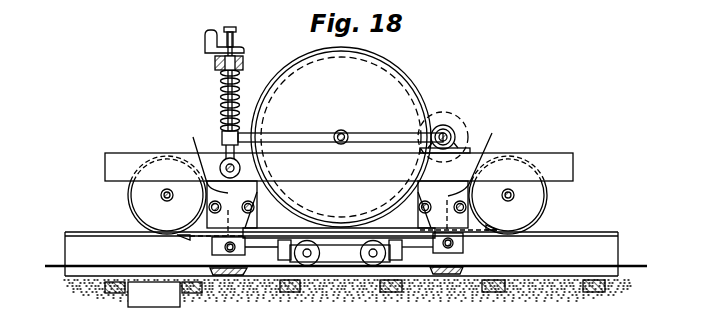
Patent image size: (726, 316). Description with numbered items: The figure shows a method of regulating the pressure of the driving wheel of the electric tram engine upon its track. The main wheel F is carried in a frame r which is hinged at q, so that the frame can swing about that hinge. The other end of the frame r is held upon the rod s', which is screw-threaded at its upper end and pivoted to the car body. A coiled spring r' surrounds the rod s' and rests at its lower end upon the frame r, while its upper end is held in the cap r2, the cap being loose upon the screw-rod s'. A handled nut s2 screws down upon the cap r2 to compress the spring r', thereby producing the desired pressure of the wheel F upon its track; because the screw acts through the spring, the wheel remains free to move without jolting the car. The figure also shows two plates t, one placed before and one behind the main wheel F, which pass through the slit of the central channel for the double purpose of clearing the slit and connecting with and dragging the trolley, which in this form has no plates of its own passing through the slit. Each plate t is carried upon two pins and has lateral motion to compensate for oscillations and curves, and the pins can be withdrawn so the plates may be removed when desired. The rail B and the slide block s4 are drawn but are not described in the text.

The rail B is at (596, 231).
The main wheel F is at (341, 137).
The hinge q is at (342, 182).
The plates t is at (337, 227).
The frame r is at (354, 137).
The slide block s4 is at (226, 165).
The coiled spring r' is at (212, 82).
The cap r2 is at (244, 63).
The handled nut s2 is at (206, 50).
The rod s' is at (241, 33).